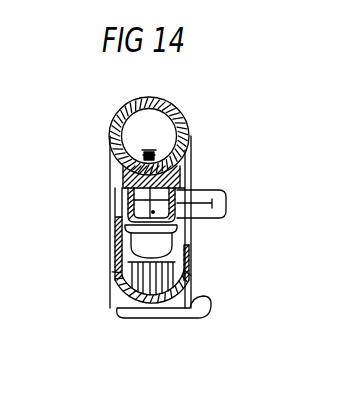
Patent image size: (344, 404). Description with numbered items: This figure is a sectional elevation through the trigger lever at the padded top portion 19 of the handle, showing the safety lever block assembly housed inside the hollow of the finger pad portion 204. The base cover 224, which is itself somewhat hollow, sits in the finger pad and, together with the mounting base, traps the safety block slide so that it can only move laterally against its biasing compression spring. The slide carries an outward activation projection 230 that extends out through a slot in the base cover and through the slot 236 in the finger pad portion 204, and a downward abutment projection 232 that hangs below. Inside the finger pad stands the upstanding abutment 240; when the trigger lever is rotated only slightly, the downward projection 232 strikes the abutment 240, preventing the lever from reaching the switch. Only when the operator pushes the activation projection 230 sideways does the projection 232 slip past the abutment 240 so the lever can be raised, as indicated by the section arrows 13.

The top portion 19 is at (167, 118).
The view direction arrows 13 is at (112, 178).
The outward activation projection 230 is at (207, 193).
The base cover 224 is at (176, 219).
The slot 236 is at (188, 239).
The finger pad portion 204 is at (194, 280).
The downward abutment projection 232 is at (115, 263).
The upstanding abutment 240 is at (128, 299).